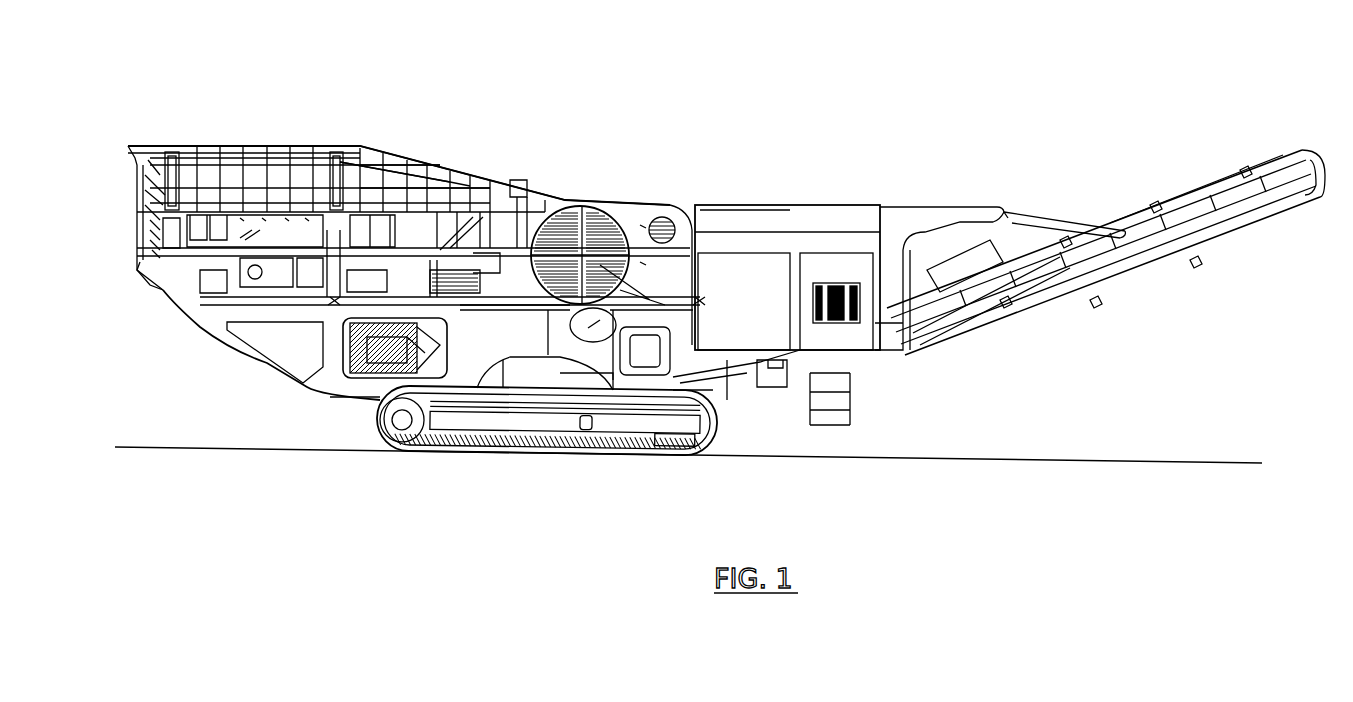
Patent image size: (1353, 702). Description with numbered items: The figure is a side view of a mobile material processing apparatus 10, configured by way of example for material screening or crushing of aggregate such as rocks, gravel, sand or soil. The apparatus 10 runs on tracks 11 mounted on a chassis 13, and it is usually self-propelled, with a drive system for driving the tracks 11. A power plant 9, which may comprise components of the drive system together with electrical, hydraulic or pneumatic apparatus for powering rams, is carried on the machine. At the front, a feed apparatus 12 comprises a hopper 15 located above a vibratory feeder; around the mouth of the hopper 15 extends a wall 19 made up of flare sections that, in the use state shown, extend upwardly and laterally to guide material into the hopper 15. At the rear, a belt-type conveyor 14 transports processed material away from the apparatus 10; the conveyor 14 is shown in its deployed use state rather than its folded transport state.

The material processing apparatus 10 is at (899, 234).
The tracks 11 is at (713, 430).
The feed apparatus 12 is at (195, 278).
The chassis 13 is at (327, 387).
The conveyor 14 is at (1203, 187).
The hopper 15 is at (428, 160).
The wall 19 is at (210, 146).
The power plant 9 is at (718, 196).